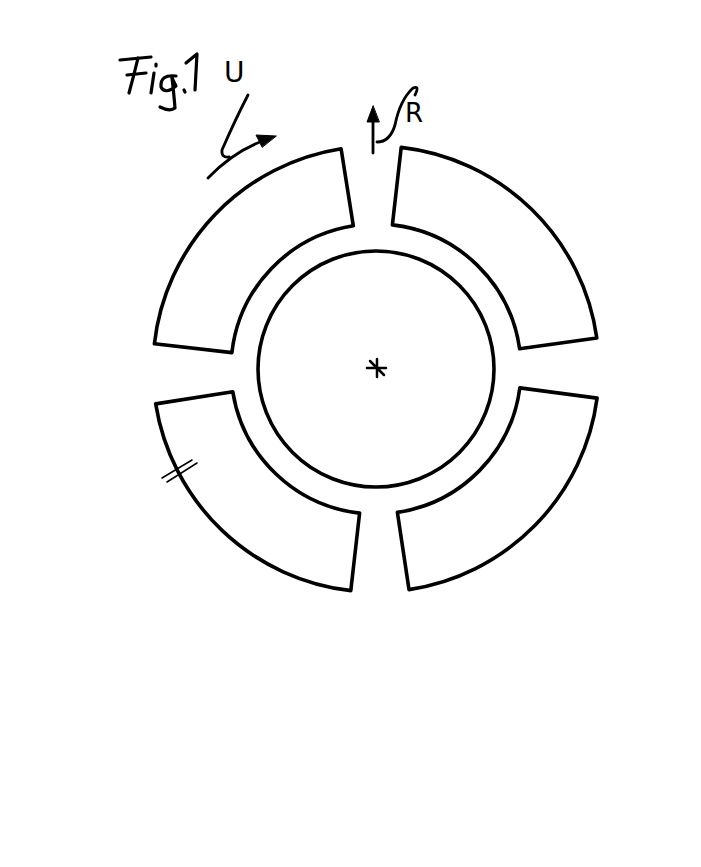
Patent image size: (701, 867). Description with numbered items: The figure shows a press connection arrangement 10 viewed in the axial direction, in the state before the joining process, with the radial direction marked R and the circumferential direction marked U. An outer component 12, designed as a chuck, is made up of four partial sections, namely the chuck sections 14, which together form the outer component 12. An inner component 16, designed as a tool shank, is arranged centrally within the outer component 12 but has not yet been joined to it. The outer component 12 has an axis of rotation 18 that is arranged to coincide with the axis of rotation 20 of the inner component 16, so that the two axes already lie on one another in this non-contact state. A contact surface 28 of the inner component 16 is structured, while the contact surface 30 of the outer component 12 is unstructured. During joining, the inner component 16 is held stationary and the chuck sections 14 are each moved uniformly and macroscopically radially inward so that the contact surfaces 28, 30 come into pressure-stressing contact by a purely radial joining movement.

The press connection arrangement 10 is at (480, 140).
The outer component 12 is at (490, 200).
The chuck sections 14 is at (203, 246).
The inner component 16 is at (475, 384).
The axis of rotation of the outer component 18 is at (371, 368).
The axis of rotation of the inner component 20 is at (378, 371).
The contact surface of the inner component 28 is at (478, 305).
The contact surface of the outer component 30 is at (266, 442).